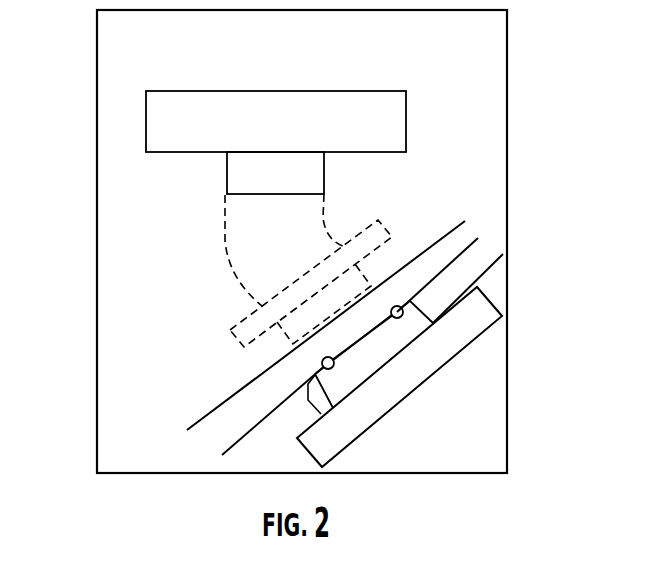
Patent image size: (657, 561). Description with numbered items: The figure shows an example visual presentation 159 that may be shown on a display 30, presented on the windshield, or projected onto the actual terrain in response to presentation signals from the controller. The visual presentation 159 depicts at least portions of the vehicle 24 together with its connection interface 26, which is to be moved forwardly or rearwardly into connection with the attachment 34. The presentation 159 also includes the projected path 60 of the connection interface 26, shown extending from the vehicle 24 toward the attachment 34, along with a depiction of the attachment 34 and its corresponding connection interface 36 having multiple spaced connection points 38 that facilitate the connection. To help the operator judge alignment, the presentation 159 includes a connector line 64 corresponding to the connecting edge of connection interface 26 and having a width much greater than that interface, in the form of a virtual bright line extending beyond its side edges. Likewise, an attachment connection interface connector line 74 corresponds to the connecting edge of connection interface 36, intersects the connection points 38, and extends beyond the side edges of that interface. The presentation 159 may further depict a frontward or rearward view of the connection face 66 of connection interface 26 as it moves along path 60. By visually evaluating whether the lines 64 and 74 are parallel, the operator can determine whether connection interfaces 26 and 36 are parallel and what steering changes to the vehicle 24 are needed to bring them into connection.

The vehicle 24 is at (146, 131).
The connection interface 26 is at (324, 173).
The display 30 is at (508, 73).
The attachment 34 is at (490, 303).
The connection interface 36 is at (503, 254).
The connection points 38 is at (397, 306).
The projected path 60 is at (228, 246).
The connector line 64 is at (455, 227).
The connection face 66 is at (290, 352).
The attachment connection interface connector line 74 is at (477, 240).
The visual presentation 159 is at (440, 97).